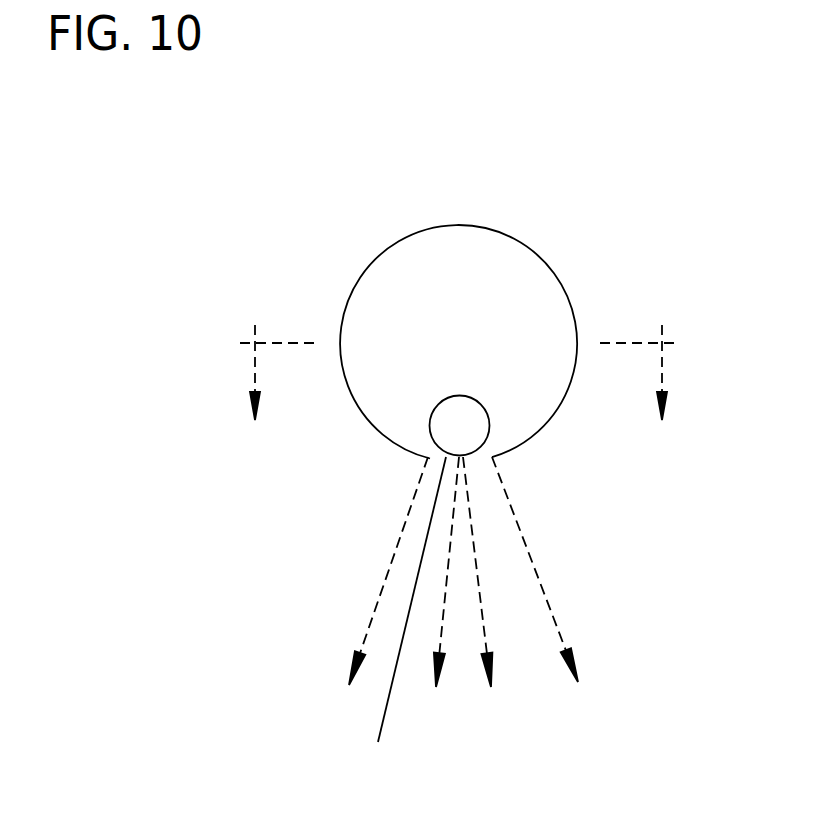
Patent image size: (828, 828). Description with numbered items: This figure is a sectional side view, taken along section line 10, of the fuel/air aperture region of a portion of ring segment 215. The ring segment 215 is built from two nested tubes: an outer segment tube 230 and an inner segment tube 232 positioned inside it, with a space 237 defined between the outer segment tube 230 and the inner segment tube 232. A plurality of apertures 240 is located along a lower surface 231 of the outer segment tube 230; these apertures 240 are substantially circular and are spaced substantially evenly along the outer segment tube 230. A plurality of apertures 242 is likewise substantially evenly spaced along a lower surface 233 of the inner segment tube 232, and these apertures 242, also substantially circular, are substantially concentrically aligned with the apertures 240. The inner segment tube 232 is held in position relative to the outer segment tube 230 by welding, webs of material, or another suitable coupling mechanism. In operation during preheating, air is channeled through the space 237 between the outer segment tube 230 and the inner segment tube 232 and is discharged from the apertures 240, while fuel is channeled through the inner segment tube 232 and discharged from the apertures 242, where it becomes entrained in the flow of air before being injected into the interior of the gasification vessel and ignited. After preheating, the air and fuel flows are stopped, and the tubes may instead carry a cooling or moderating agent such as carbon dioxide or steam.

The section line 10 is at (457, 364).
The ring segment 215 is at (322, 247).
The outer segment tube 230 is at (352, 398).
The lower surface of outer segment tube 231 is at (537, 463).
The inner segment tube 232 is at (430, 426).
The lower surface of inner segment tube 233 is at (397, 618).
The space 237 is at (473, 268).
The apertures 240 is at (427, 465).
The apertures 242 is at (475, 458).